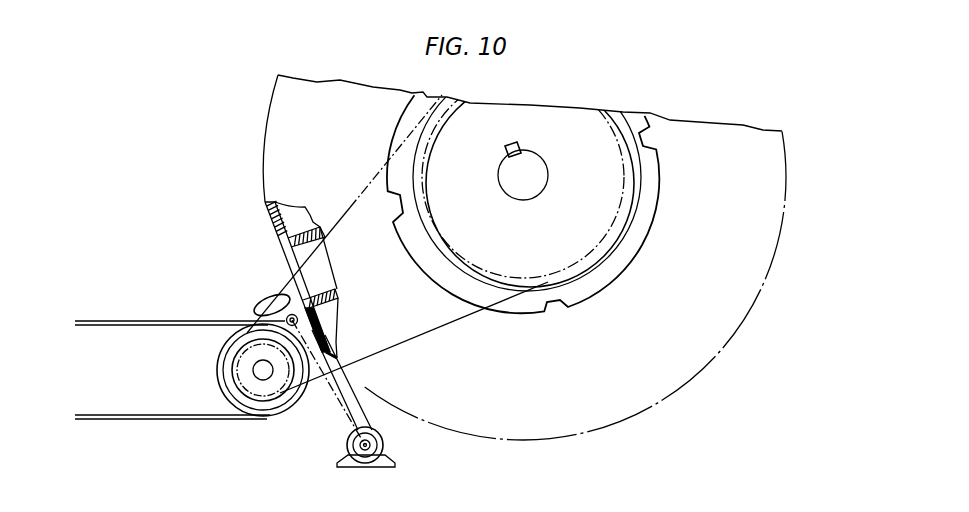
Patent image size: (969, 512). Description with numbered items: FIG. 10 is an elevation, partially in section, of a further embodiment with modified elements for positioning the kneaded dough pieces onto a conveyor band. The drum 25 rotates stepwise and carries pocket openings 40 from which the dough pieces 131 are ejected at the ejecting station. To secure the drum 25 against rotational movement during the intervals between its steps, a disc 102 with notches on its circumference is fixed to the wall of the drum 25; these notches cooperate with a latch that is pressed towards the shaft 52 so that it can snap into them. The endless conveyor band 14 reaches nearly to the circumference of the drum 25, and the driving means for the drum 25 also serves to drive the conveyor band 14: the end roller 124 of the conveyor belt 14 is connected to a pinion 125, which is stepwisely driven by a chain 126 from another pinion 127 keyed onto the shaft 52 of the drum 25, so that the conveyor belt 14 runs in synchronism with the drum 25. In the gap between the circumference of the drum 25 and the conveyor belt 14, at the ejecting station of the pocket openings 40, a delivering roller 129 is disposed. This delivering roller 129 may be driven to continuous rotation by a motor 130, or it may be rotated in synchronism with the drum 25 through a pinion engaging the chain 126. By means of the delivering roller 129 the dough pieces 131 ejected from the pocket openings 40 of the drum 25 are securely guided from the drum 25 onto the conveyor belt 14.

The endless conveyor band 14 is at (95, 319).
The drum 25 is at (300, 118).
The pocket openings 40 is at (303, 255).
The shaft 52 is at (530, 188).
The disc 102 is at (643, 182).
The end roller 124 is at (258, 405).
The pinion 125 is at (234, 360).
The chain 126 is at (349, 209).
The pinion 127 is at (610, 243).
The delivering roller 129 is at (254, 309).
The motor 130 is at (350, 446).
The dough pieces 131 is at (270, 296).